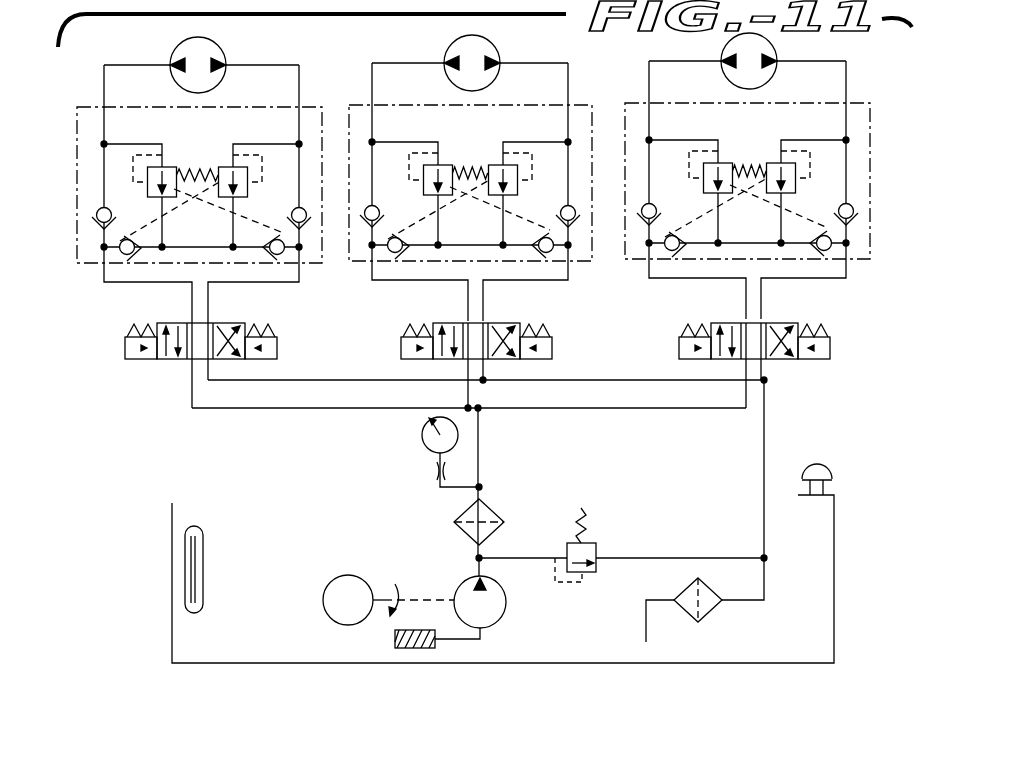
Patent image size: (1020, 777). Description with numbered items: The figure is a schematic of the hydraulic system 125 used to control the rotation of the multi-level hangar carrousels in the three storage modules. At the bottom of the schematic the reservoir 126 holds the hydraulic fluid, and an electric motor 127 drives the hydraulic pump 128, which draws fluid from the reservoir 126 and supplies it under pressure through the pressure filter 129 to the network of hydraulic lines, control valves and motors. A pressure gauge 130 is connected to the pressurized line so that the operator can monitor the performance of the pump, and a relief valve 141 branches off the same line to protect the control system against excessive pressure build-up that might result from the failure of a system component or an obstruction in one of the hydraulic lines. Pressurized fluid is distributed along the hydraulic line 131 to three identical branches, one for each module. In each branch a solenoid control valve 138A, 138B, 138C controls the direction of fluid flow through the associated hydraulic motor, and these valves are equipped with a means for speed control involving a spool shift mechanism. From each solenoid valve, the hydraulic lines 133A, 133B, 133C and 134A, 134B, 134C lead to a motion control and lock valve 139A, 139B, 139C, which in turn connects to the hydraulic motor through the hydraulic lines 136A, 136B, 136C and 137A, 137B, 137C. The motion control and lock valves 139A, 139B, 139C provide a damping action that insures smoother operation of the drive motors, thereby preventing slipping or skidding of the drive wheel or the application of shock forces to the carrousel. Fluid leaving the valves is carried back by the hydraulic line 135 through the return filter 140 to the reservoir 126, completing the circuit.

The hydraulic system 125 is at (850, 407).
The reservoir 126 is at (293, 539).
The electric motor 127 is at (378, 562).
The hydraulic pump 128 is at (501, 615).
The pressure filter 129 is at (491, 508).
The pressure gauge 130 is at (420, 436).
The hydraulic line 131 is at (323, 410).
The hydraulic line 133A is at (178, 283).
The hydraulic line 133B is at (454, 281).
The hydraulic line 133C is at (732, 279).
The hydraulic line 134A is at (222, 283).
The hydraulic line 134B is at (497, 281).
The hydraulic line 134C is at (775, 279).
The hydraulic line 135 is at (763, 454).
The hydraulic line 136A is at (131, 71).
The hydraulic line 136B is at (401, 69).
The hydraulic line 136C is at (679, 67).
The hydraulic line 137A is at (301, 71).
The hydraulic line 137B is at (571, 69).
The hydraulic line 137C is at (848, 67).
The solenoid control valve 138A is at (157, 366).
The solenoid control valve 138B is at (433, 366).
The solenoid control valve 138C is at (711, 366).
The motion control and lock valve 139A is at (78, 258).
The motion control and lock valve 139B is at (350, 256).
The motion control and lock valve 139C is at (626, 254).
The return filter 140 is at (710, 614).
The relief valve 141 is at (596, 548).